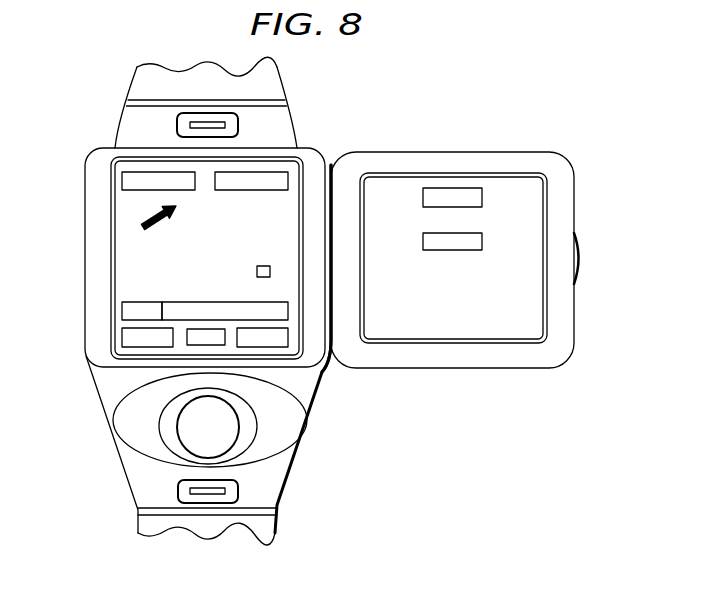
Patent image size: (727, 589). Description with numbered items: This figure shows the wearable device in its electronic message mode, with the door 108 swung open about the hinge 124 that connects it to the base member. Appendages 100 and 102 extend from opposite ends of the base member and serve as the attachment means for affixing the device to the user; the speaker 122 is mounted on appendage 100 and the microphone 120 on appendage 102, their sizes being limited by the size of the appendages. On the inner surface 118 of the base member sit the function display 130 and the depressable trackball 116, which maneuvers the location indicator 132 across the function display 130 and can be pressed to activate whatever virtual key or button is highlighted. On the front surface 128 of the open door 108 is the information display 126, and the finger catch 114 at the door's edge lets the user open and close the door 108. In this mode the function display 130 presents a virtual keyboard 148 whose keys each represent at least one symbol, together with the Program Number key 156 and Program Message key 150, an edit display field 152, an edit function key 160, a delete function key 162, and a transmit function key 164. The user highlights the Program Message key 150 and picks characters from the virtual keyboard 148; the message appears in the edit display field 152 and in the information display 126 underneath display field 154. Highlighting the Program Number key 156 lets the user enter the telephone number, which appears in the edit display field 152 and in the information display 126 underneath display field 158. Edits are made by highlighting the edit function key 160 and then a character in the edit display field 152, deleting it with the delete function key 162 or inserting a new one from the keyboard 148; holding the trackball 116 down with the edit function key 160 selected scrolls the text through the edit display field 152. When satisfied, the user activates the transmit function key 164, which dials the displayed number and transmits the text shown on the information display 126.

The appendage 100 is at (283, 95).
The appendage 102 is at (277, 520).
The door 108 is at (497, 150).
The finger catch 114 is at (581, 254).
The depressable trackball 116 is at (237, 440).
The inner surface 118 is at (112, 390).
The microphone 120 is at (178, 487).
The speaker 122 is at (177, 124).
The hinge 124 is at (339, 370).
The information display 126 is at (545, 177).
The front surface 128 is at (417, 163).
The function display 130 is at (115, 232).
The location indicator 132 is at (170, 210).
The virtual keyboard 148 is at (117, 199).
The Program Message key 150 is at (298, 165).
The edit display field 152 is at (170, 298).
The display field 154 is at (482, 243).
The Program Number key 156 is at (122, 178).
The display field 158 is at (482, 197).
The edit function key 160 is at (122, 312).
The delete function key 162 is at (122, 338).
The transmit function key 164 is at (213, 347).